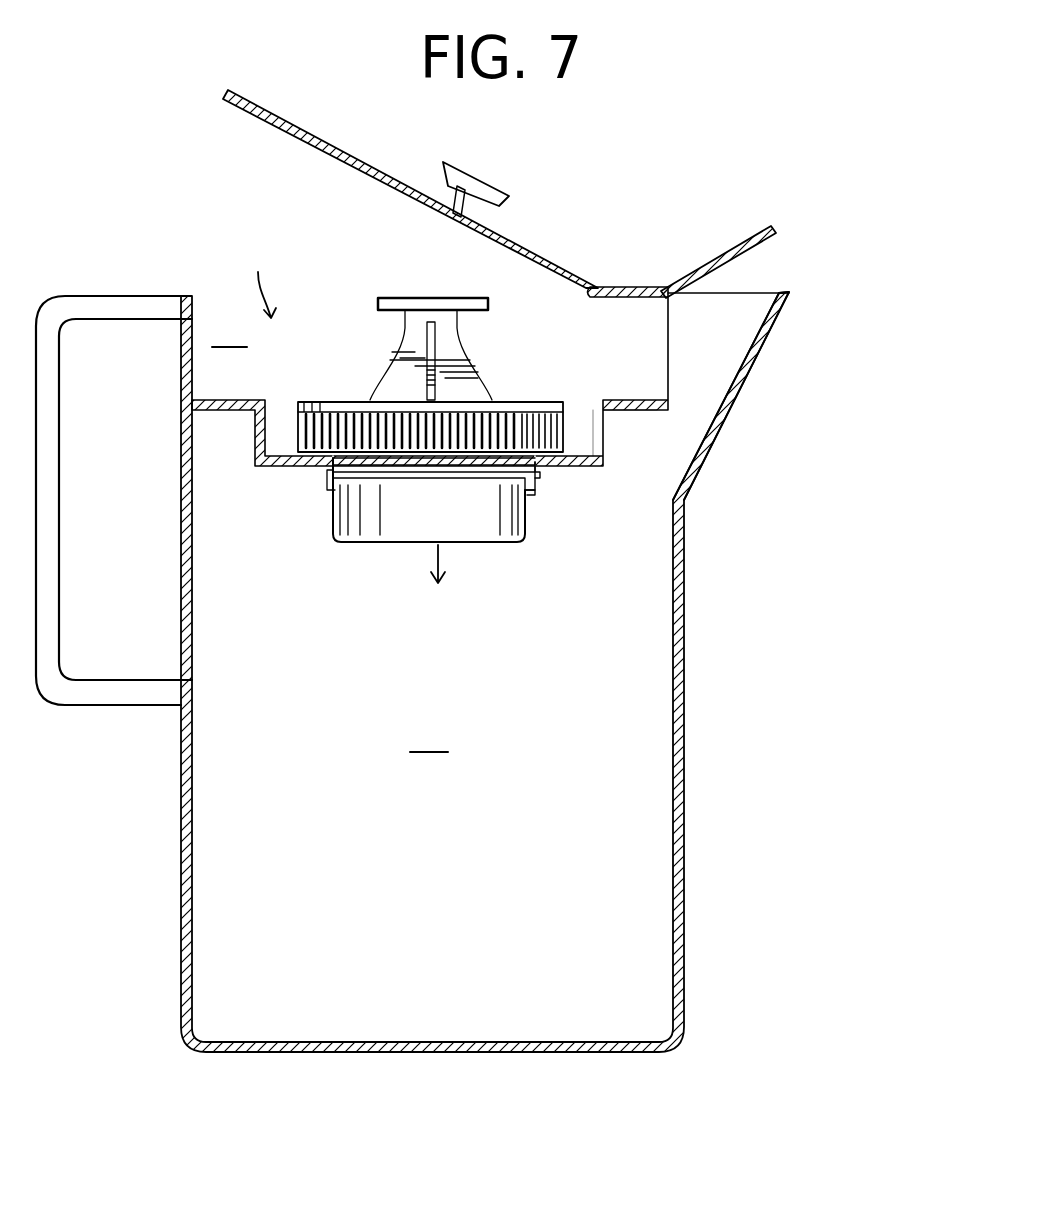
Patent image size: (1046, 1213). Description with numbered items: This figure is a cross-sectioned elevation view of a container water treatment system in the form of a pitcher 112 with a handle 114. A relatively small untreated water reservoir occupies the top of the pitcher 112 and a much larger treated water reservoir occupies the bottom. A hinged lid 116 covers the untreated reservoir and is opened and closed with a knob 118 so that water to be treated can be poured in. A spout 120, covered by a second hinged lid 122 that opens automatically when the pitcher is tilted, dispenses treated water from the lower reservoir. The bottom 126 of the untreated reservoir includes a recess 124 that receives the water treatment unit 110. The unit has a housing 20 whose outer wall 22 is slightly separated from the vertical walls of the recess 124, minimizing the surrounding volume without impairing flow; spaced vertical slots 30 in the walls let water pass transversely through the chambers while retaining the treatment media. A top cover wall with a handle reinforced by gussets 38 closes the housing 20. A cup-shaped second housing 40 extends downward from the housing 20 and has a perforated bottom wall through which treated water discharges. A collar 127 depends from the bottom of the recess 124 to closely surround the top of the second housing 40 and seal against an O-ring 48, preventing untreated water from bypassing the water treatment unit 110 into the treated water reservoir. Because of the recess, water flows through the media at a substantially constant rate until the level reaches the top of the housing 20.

The pitcher 112 is at (706, 538).
The handle 114 is at (126, 296).
The hinged lid 116 is at (303, 131).
The knob 118 is at (472, 168).
The spout 120 is at (743, 378).
The hinged lid 122 is at (740, 240).
The recess 124 is at (405, 328).
The bottom 126 is at (612, 400).
The collar 127 is at (538, 495).
The water treatment unit 110 is at (512, 381).
The gussets 38 is at (437, 330).
The housing 20 is at (298, 410).
The outer wall 22 is at (326, 405).
The vertical slots 30 is at (528, 410).
The second housing 40 is at (470, 514).
The O-ring 48 is at (538, 477).